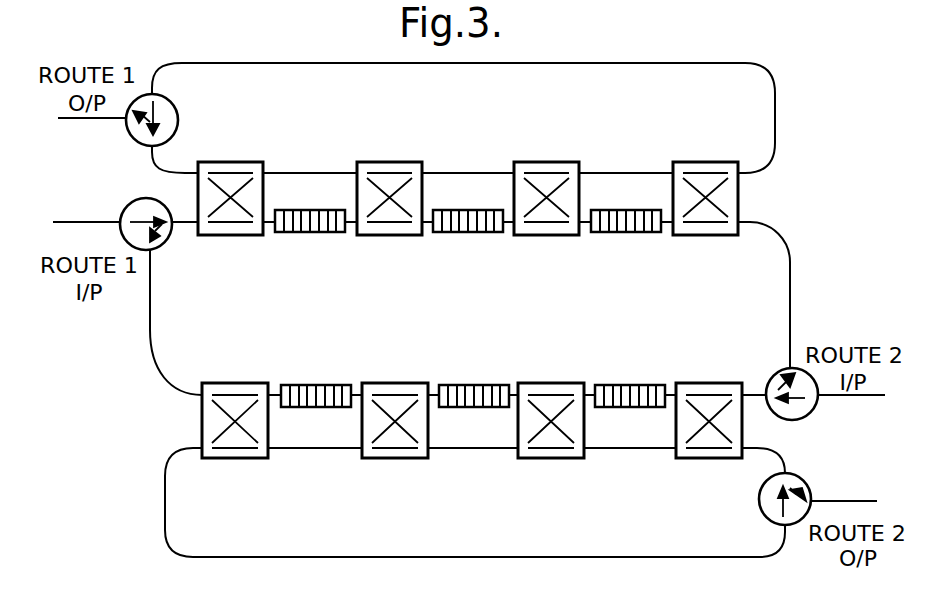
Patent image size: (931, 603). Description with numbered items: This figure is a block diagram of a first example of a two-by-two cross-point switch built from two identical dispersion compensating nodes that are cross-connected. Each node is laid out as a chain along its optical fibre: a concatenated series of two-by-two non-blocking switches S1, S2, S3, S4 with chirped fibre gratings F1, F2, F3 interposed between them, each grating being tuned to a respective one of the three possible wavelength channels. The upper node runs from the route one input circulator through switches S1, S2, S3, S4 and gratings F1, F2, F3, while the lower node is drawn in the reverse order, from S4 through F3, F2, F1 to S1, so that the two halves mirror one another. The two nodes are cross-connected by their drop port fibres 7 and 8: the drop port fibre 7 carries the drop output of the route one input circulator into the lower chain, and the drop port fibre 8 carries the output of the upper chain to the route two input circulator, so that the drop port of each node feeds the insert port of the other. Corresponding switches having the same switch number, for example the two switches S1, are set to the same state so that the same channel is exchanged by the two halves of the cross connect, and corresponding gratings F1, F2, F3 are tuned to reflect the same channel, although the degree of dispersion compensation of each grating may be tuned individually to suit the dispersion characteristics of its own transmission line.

The drop port fibre 7 is at (149, 320).
The drop port fibre 8 is at (792, 298).
The 2×2 non-blocking switch S1 is at (470, 312).
The 2×2 non-blocking switch S2 is at (470, 312).
The 2×2 non-blocking switch S3 is at (470, 312).
The 2×2 non-blocking switch S4 is at (470, 312).
The chirped fibre grating F1 is at (470, 312).
The chirped fibre grating F2 is at (471, 312).
The chirped fibre grating F3 is at (471, 312).